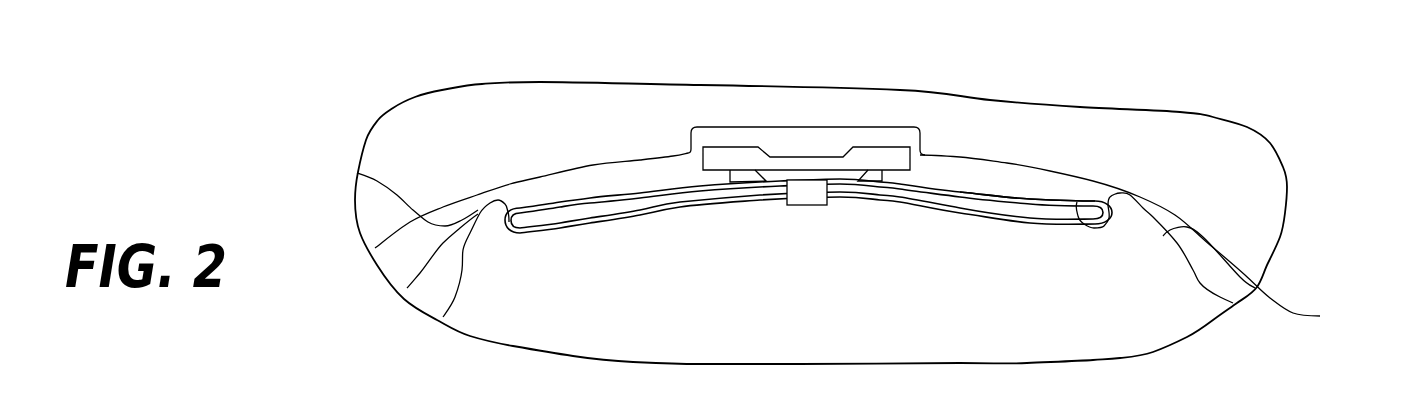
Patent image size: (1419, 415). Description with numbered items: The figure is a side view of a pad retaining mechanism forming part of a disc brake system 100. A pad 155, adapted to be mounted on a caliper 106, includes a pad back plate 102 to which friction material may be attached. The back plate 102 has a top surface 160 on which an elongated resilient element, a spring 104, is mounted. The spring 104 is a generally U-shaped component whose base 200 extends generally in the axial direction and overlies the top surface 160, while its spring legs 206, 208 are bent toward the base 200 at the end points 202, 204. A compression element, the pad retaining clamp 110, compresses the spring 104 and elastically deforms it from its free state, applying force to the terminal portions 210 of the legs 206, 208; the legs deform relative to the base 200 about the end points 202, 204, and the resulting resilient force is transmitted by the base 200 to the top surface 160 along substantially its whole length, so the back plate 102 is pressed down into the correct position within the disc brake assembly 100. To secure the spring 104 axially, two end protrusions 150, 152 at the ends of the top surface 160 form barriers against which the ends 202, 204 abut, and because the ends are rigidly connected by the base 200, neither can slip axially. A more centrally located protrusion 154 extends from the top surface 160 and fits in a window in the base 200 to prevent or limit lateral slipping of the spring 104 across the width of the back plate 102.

The disc brake system 100 is at (1320, 197).
The pad back plate 102 is at (1136, 322).
The spring 104 is at (808, 220).
The caliper 106 is at (448, 162).
The pad retaining clamp 110 is at (889, 164).
The end protrusion 150 is at (357, 173).
The end protrusion 152 is at (1244, 248).
The central protrusion 154 is at (810, 207).
The pad 155 is at (627, 298).
The top surface 160 is at (910, 216).
The base 200 is at (1018, 210).
The end point 202 is at (1077, 202).
The end point 204 is at (443, 317).
The spring leg 206 is at (577, 195).
The spring leg 208 is at (995, 192).
The terminal portion 210 is at (768, 180).